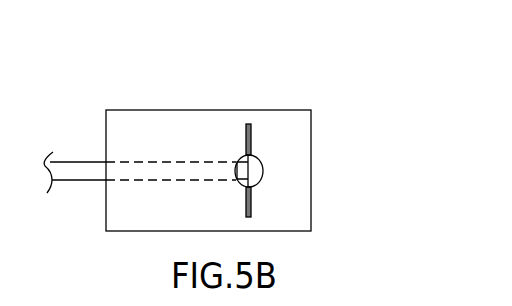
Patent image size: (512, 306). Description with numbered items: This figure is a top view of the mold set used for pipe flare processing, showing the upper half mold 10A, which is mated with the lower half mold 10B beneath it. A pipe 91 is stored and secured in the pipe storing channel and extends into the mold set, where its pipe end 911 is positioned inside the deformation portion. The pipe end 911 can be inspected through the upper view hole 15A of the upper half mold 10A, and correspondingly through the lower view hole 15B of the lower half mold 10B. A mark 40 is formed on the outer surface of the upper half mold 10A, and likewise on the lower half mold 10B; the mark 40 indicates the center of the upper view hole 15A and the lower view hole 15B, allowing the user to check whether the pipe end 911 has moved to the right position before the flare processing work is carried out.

The upper half mold 10A is at (205, 121).
The lower half mold 10B is at (147, 116).
The pipe 91 is at (80, 165).
The mark 40 is at (246, 138).
The upper view hole 15A is at (356, 162).
The lower view hole 15B is at (262, 170).
The pipe end 911 is at (248, 177).